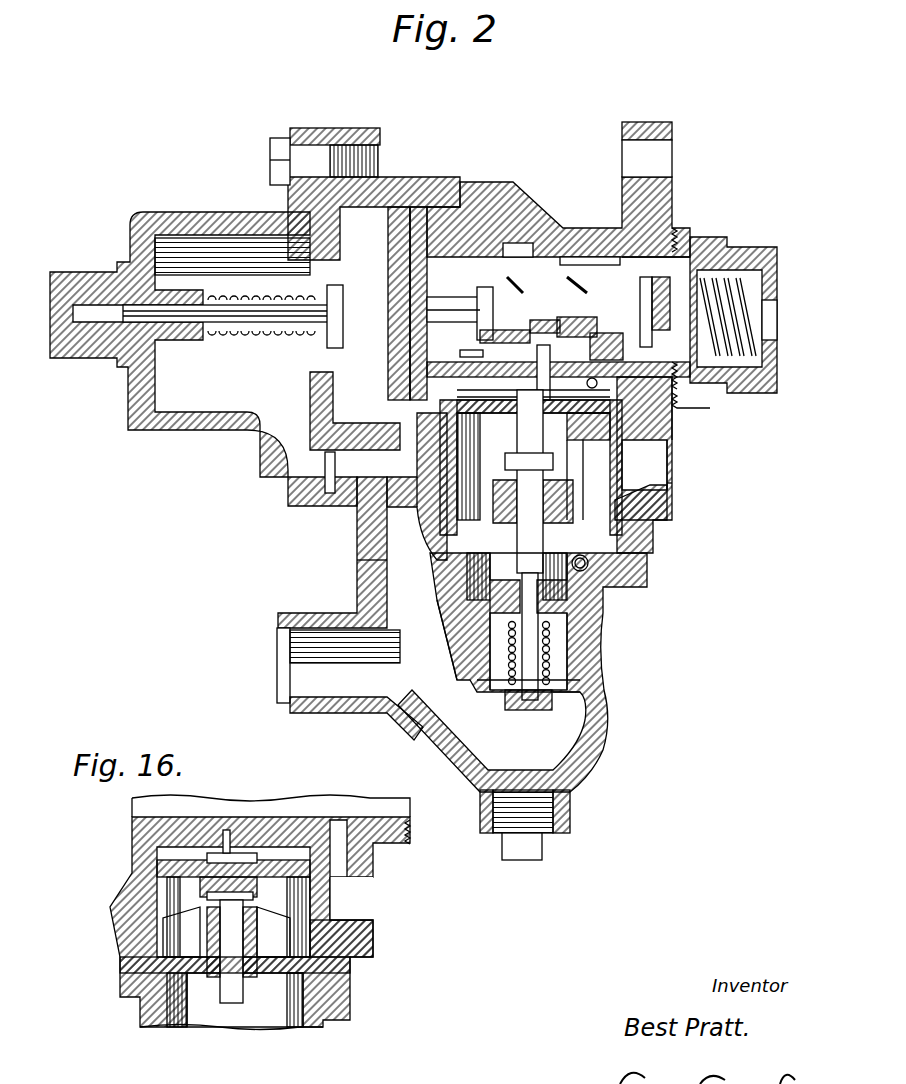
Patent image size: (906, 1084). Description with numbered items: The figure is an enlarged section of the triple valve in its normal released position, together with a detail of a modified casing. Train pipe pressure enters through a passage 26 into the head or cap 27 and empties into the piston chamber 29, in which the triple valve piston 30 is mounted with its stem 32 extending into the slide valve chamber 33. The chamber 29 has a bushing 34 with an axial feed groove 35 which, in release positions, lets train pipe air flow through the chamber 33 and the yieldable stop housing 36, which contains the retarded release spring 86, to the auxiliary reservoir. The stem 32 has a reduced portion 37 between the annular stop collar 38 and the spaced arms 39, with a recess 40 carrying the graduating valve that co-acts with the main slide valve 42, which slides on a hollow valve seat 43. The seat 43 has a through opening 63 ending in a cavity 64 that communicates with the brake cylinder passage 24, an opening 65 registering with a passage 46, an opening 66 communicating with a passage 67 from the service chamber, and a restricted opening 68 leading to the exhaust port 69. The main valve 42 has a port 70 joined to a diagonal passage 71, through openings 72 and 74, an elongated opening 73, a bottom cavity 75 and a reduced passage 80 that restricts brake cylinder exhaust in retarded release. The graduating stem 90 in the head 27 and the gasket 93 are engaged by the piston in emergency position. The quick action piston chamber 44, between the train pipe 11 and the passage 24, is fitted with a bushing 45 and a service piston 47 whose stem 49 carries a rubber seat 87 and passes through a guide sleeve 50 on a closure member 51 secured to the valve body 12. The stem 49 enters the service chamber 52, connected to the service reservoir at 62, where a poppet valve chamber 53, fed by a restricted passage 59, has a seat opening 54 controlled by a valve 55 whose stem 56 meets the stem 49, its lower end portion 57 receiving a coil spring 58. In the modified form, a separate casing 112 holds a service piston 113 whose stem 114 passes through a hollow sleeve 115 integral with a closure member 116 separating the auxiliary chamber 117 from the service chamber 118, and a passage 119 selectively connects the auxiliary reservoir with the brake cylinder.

In FIG. 2, the train pipe 11 is at (316, 690).
In FIG. 2, the valve body 12 is at (358, 578).
In FIG. 2, the brake cylinder passage 24 is at (668, 437).
In FIG. 2, the passage 26 is at (356, 560).
In FIG. 2, the head or cap 27 is at (188, 398).
In FIG. 2, the piston chamber 29 is at (318, 380).
In FIG. 2, the triple valve piston 30 is at (417, 240).
In FIG. 2, the piston stem 32 is at (440, 298).
In FIG. 2, the slide valve chamber 33 is at (546, 268).
In FIG. 2, the bushing 34 is at (372, 195).
In FIG. 2, the notch or groove 35 is at (402, 230).
In FIG. 2, the yieldable stop housing 36 is at (733, 247).
In FIG. 2, the reduced portion 37 is at (600, 258).
In FIG. 2, the annular stop collar 38 is at (498, 290).
In FIG. 2, the end flanges or spaced arms 39 is at (660, 262).
In FIG. 2, the recess 40 is at (563, 262).
In FIG. 2, the main slide valve 42 is at (632, 262).
In FIG. 2, the hollow valve seat 43 is at (712, 400).
In FIG. 2, the quick action piston chamber 44 is at (615, 480).
In FIG. 2, the bushing 45 is at (667, 490).
In FIG. 2, the passage 46 is at (552, 480).
In FIG. 2, the service piston 47 is at (630, 445).
In FIG. 2, the stem 49 is at (613, 480).
In FIG. 2, the guide sleeve 50 is at (455, 603).
In FIG. 2, the closure member 51 is at (452, 560).
In FIG. 2, the service chamber 52 is at (590, 588).
In FIG. 2, the poppet or vent valve chamber 53 is at (553, 657).
In FIG. 2, the valve seat opening 54 is at (585, 638).
In FIG. 2, the valve 55 is at (513, 647).
In FIG. 2, the valve stem 56 is at (530, 578).
In FIG. 2, the lower end portion 57 is at (517, 690).
In FIG. 2, the coil spring 58 is at (560, 690).
In FIG. 2, the restricted opening or passage 59 is at (490, 685).
In FIG. 2, the connection 62 is at (590, 563).
In FIG. 2, the through opening 63 is at (586, 388).
In FIG. 2, the elongated cavity 64 is at (678, 412).
In FIG. 2, the opening 65 is at (522, 420).
In FIG. 2, the opening 66 is at (497, 362).
In FIG. 2, the passage 67 is at (405, 448).
In FIG. 16, the passage 67 is at (137, 897).
In FIG. 2, the restricted opening 68 is at (398, 389).
In FIG. 2, the exhaust port 69 is at (490, 425).
In FIG. 2, the port 70 is at (540, 345).
In FIG. 2, the longitudinal passage 71 is at (513, 330).
In FIG. 2, the through opening 72 is at (546, 320).
In FIG. 2, the elongated transversely disposed opening 73 is at (605, 345).
In FIG. 2, the through opening 74 is at (624, 348).
In FIG. 2, the elongated cavity 75 is at (576, 328).
In FIG. 2, the reduced passage 80 is at (547, 286).
In FIG. 2, the retarded release spring 86 is at (792, 246).
In FIG. 2, the rubber seat 87 is at (513, 457).
In FIG. 2, the graduating stem 90 is at (188, 316).
In FIG. 2, the gasket 93 is at (335, 138).
In FIG. 16, the separate casing 112 is at (347, 938).
In FIG. 16, the service piston 113 is at (157, 865).
In FIG. 16, the stem 114 is at (143, 990).
In FIG. 16, the hollow boss or sleeve 115 is at (250, 930).
In FIG. 16, the closure member 116 is at (353, 980).
In FIG. 16, the auxiliary chamber 117 is at (175, 920).
In FIG. 16, the service chamber 118 is at (280, 1007).
In FIG. 16, the passage 119 is at (353, 893).